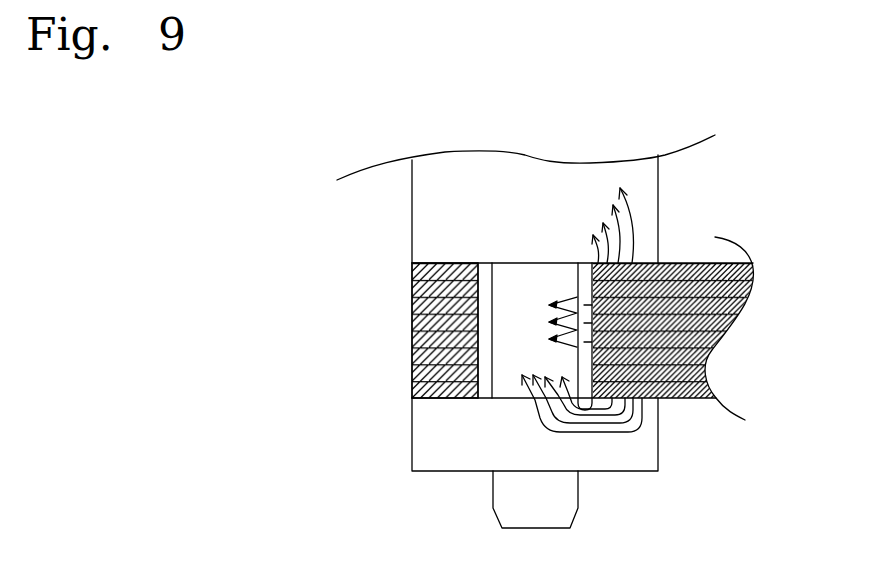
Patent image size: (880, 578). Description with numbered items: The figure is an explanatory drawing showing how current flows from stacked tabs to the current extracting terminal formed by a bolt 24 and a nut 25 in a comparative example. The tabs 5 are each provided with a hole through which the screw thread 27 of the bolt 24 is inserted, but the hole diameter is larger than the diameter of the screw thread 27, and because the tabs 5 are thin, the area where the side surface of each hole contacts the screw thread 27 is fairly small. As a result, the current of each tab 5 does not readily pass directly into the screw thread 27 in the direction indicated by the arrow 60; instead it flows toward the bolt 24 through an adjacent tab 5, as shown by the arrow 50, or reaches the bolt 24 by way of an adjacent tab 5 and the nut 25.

The bolt 24 is at (455, 222).
The tabs 5 is at (428, 322).
The nut 25 is at (443, 433).
The screw thread 27 is at (557, 503).
The arrow 50 is at (564, 319).
The arrow 60 is at (544, 336).